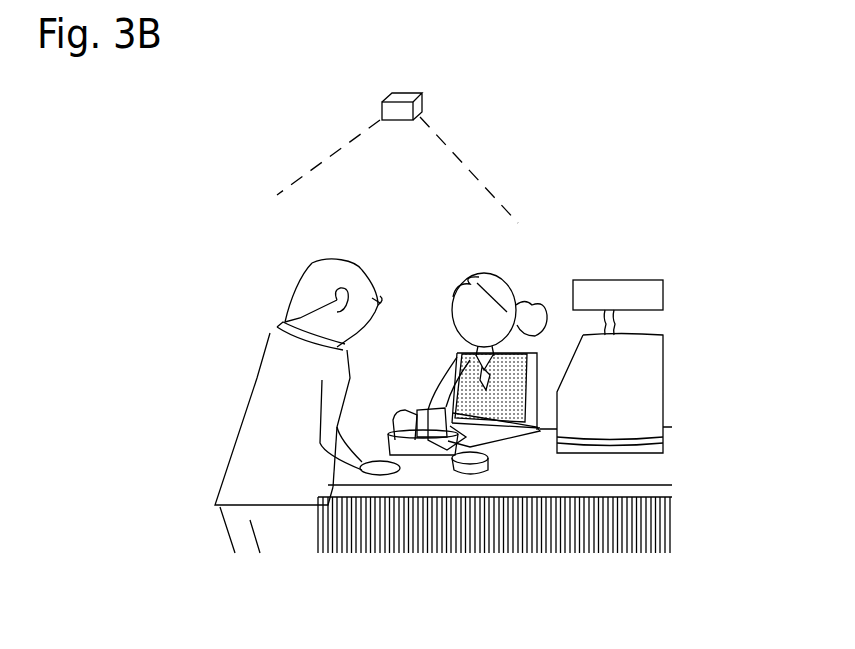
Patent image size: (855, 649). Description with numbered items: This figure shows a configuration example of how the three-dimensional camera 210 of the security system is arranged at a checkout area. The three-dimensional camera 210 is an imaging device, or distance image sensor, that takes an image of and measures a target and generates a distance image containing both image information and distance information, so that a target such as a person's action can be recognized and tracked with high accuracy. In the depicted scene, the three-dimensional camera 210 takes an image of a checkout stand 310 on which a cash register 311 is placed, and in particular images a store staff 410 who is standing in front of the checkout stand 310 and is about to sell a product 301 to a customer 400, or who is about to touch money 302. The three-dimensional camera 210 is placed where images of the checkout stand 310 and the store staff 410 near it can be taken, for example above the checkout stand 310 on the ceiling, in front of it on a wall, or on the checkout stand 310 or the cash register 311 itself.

The 3D camera 210 is at (403, 93).
The checkout stand 310 is at (688, 472).
The cash register 311 is at (617, 278).
The store staff 410 is at (517, 277).
The money 302 is at (437, 410).
The product 301 is at (490, 465).
The customer 400 is at (252, 387).